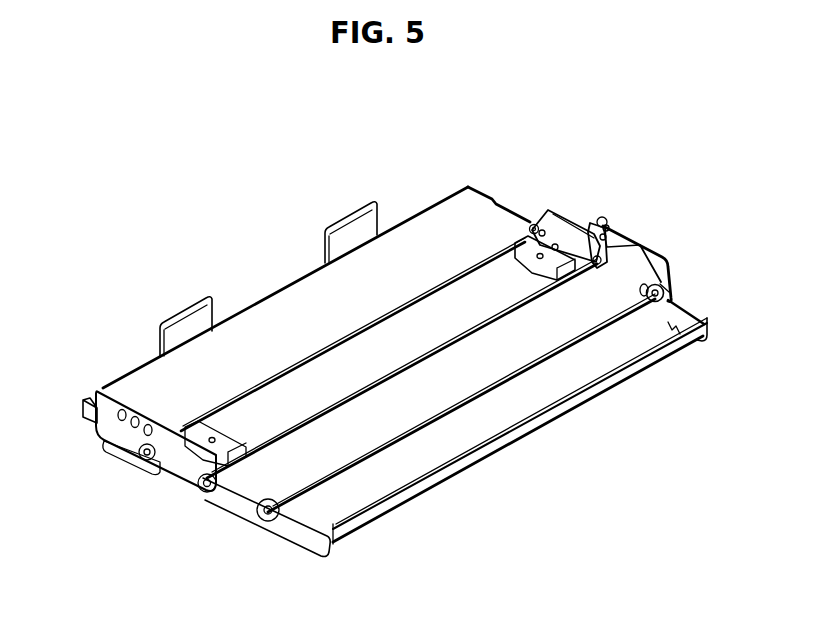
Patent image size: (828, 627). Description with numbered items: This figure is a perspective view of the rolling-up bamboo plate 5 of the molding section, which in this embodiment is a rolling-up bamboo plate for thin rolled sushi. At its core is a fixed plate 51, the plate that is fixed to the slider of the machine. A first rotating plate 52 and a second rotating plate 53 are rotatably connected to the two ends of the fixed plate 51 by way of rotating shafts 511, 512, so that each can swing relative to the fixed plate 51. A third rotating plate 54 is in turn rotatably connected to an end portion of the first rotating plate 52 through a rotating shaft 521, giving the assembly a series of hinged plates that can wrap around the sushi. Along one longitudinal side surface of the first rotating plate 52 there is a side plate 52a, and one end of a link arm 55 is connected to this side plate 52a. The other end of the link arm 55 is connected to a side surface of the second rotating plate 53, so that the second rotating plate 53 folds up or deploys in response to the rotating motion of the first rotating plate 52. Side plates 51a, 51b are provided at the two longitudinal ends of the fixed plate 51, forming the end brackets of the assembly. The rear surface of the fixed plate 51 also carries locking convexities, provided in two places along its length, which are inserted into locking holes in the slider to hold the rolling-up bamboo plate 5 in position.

The rolling-up bamboo plate 5 is at (282, 239).
The second rotating plate 53 is at (431, 231).
The fixed plate 51 is at (417, 333).
The side plate 51a is at (574, 221).
The side plate 51b is at (180, 458).
The rotating shaft 511 is at (597, 230).
The rotating shaft 512 is at (532, 225).
The first rotating plate 52 is at (388, 412).
The side plate 52a is at (647, 257).
The rotating shaft 521 is at (672, 268).
The third rotating plate 54 is at (463, 438).
The link arm 55 is at (606, 222).